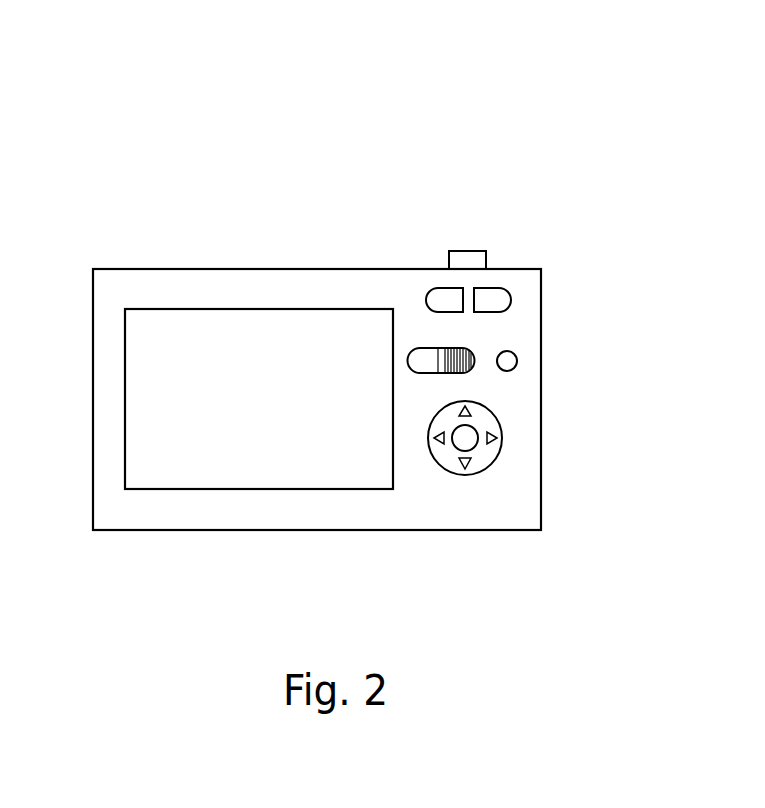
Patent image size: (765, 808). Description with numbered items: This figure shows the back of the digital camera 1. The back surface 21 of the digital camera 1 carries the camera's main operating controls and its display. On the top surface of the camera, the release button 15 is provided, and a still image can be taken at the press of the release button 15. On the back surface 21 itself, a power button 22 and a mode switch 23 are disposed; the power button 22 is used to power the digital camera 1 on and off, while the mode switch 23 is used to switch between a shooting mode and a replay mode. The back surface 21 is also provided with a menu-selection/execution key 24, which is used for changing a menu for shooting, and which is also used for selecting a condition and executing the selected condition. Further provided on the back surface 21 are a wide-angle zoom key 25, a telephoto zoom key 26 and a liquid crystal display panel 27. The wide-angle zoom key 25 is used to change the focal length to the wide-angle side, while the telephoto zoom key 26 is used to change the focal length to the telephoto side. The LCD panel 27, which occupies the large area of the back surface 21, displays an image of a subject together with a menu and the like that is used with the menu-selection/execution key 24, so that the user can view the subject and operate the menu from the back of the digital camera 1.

The digital camera 1 is at (328, 193).
The back surface 21 is at (197, 287).
The liquid crystal display (LCD) panel 27 is at (265, 458).
The release button 15 is at (473, 251).
The wide-angle zoom key 25 is at (455, 288).
The telephoto zoom key 26 is at (508, 288).
The mode switch 23 is at (468, 348).
The power button 22 is at (507, 361).
The menu-selection/execution key 24 is at (482, 452).